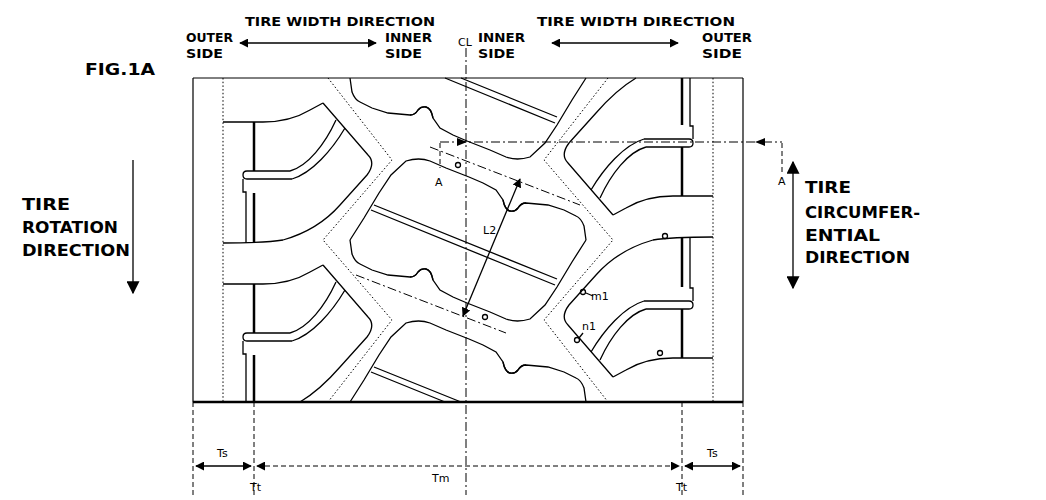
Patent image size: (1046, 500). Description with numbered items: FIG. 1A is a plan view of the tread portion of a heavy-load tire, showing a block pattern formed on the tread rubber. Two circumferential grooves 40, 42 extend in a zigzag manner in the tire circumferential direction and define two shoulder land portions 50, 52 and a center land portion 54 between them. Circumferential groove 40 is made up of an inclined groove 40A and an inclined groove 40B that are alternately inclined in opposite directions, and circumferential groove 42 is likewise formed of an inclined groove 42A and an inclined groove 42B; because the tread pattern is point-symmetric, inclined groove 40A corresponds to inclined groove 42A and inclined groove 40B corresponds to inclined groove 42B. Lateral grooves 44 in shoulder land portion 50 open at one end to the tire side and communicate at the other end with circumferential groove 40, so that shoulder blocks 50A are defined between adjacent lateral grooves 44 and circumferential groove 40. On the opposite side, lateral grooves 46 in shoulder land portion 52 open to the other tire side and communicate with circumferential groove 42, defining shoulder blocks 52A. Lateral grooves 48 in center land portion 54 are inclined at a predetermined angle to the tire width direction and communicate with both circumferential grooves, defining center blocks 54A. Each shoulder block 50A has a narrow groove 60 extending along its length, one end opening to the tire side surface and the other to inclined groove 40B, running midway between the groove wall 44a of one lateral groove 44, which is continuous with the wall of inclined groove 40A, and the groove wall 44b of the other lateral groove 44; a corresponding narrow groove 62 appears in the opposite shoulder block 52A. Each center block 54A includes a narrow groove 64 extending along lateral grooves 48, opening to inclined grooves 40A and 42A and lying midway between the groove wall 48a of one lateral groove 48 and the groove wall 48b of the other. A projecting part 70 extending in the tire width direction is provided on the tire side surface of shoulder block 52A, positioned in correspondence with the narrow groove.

The circumferential groove 40 is at (598, 404).
The inclined groove 40A is at (558, 133).
The inclined groove 40B is at (568, 381).
The circumferential groove 42 is at (337, 404).
The inclined groove 42A is at (385, 185).
The inclined groove 42B is at (362, 98).
The lateral groove 44 is at (690, 220).
The groove wall 44a is at (660, 350).
The groove wall 44b is at (665, 239).
The lateral groove 46 is at (263, 108).
The lateral groove 48 is at (487, 165).
The groove wall 48a is at (486, 314).
The groove wall 48b is at (457, 168).
The shoulder land portion 50 is at (662, 404).
The shoulder block 50A is at (650, 120).
The shoulder land portion 52 is at (288, 404).
The shoulder block 52A is at (277, 152).
The center land portion 54 is at (460, 404).
The center block 54A is at (414, 107).
The narrow groove 60 is at (635, 148).
The narrow groove 62 is at (290, 180).
The narrow groove 64 is at (421, 270).
The projecting part 70 is at (236, 209).